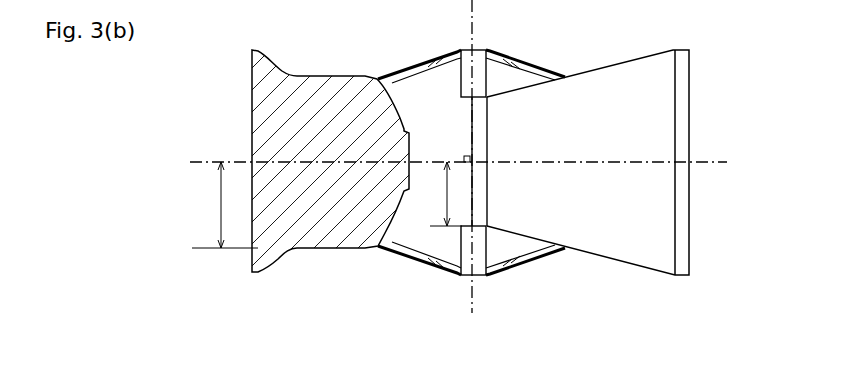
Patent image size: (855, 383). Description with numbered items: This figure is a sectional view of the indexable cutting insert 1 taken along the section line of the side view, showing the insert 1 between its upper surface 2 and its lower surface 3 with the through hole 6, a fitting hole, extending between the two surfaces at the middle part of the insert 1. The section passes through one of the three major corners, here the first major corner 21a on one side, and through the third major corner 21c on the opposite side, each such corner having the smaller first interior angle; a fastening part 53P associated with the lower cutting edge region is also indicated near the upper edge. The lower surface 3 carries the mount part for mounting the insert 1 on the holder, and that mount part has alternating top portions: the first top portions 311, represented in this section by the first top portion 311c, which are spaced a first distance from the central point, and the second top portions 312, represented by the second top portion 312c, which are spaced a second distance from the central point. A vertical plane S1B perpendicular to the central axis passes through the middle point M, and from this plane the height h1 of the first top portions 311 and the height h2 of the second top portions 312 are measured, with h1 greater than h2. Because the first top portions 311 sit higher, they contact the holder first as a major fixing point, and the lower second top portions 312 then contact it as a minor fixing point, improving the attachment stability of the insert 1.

The insert 1 is at (736, 112).
The upper surface 2 is at (574, 76).
The lower surface 3 is at (629, 268).
The first major corner 21a is at (681, 50).
The third major corner 21c is at (252, 50).
The fastening part 53P is at (672, 3).
The through hole 6 is at (699, 5).
The first top portions 311 is at (330, 200).
The first top portion 311c is at (297, 252).
The second top portions 312 is at (474, 190).
The second top portion 312c is at (477, 258).
The middle point M is at (472, 160).
The vertical plane S1B is at (166, 163).
The height of the first top portions h1 is at (225, 205).
The height of the second top portions h2 is at (442, 194).